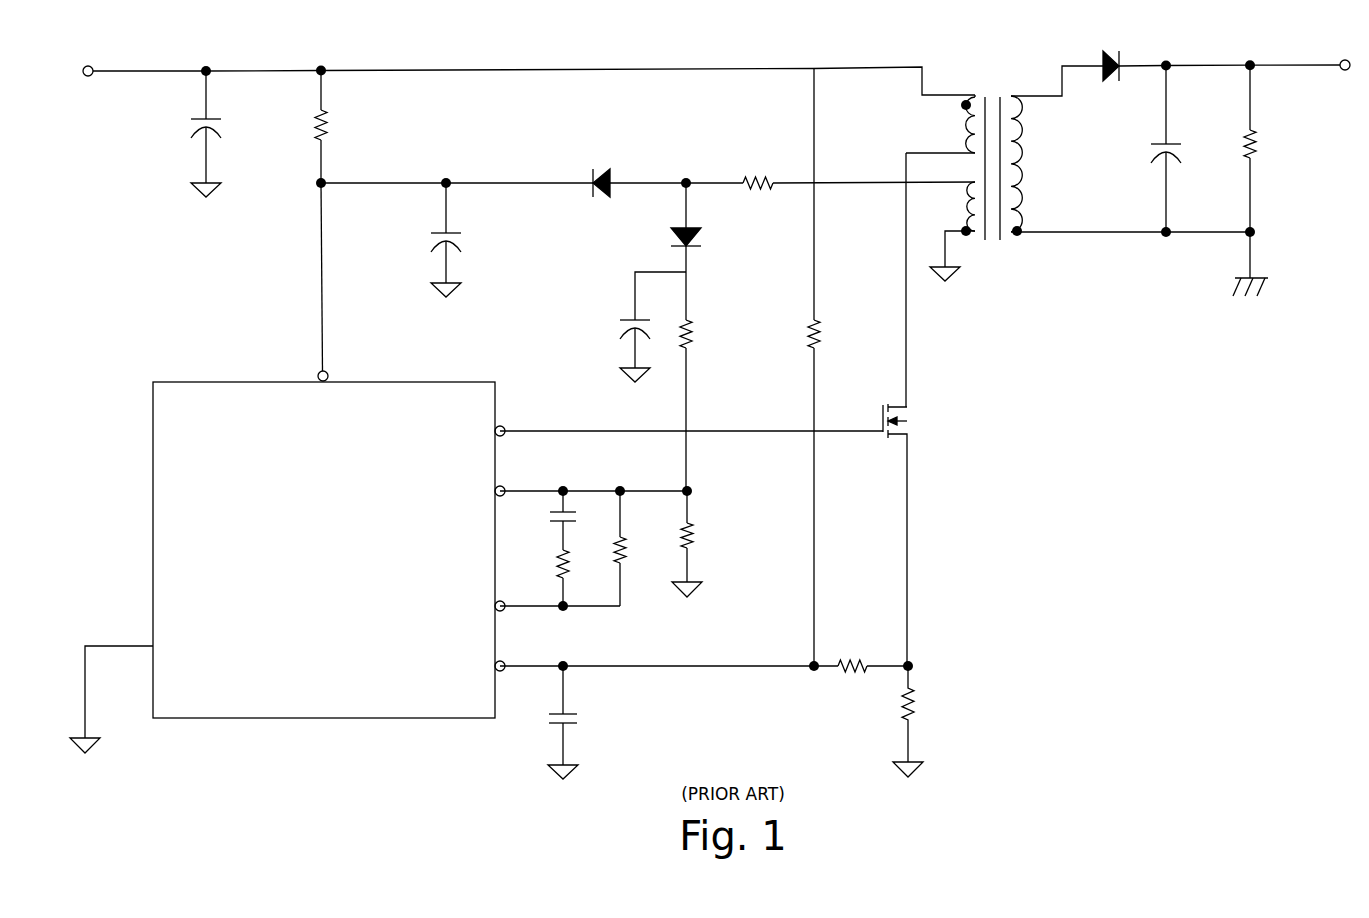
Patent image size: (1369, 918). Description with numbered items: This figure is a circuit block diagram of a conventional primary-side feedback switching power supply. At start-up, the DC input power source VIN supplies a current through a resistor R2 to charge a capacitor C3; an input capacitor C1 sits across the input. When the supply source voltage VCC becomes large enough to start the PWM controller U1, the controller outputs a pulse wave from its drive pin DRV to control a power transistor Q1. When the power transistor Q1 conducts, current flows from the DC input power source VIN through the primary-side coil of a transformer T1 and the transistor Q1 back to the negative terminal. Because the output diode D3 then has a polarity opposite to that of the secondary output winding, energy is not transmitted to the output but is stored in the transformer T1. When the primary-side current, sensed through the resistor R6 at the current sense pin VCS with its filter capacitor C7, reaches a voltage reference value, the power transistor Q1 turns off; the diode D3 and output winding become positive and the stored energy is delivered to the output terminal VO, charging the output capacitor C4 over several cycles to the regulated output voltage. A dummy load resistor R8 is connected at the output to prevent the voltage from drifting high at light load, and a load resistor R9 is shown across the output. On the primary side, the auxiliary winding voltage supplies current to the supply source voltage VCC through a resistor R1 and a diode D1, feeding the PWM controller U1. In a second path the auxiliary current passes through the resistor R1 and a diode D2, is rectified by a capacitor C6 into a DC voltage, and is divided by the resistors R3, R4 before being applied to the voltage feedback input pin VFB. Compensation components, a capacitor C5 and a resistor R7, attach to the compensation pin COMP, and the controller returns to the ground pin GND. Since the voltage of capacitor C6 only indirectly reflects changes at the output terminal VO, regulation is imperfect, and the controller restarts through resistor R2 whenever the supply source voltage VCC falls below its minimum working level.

The DC input power source VIN is at (71, 72).
The input capacitor C1 is at (194, 134).
The resistor R2 is at (333, 127).
The capacitor C3 is at (433, 240).
The diode D1 is at (602, 171).
The resistor R1 is at (758, 168).
The diode D2 is at (699, 251).
The capacitor C6 is at (642, 327).
The resistor R3 is at (702, 405).
The dummy load resistor R8 is at (689, 368).
The transformer T1 is at (986, 162).
The output rectified diode D3 is at (1110, 54).
The output terminal VO is at (1346, 53).
The output capacitor C4 is at (1155, 149).
The load resistor R9 is at (1260, 180).
The PWM controller U1 is at (324, 550).
The supply source voltage VCC is at (304, 282).
The drive pin DRV is at (519, 423).
The voltage feedback input pin VFB is at (520, 483).
The compensation pin COMP is at (479, 606).
The ground pin GND is at (132, 695).
The current sense pin VCS is at (521, 658).
The compensation capacitor C5 is at (551, 520).
The resistor R7 is at (740, 581).
The resistor R4 is at (697, 544).
The power transistor Q1 is at (910, 535).
The resistor R6 is at (917, 721).
The current sense filter capacitor C7 is at (575, 722).